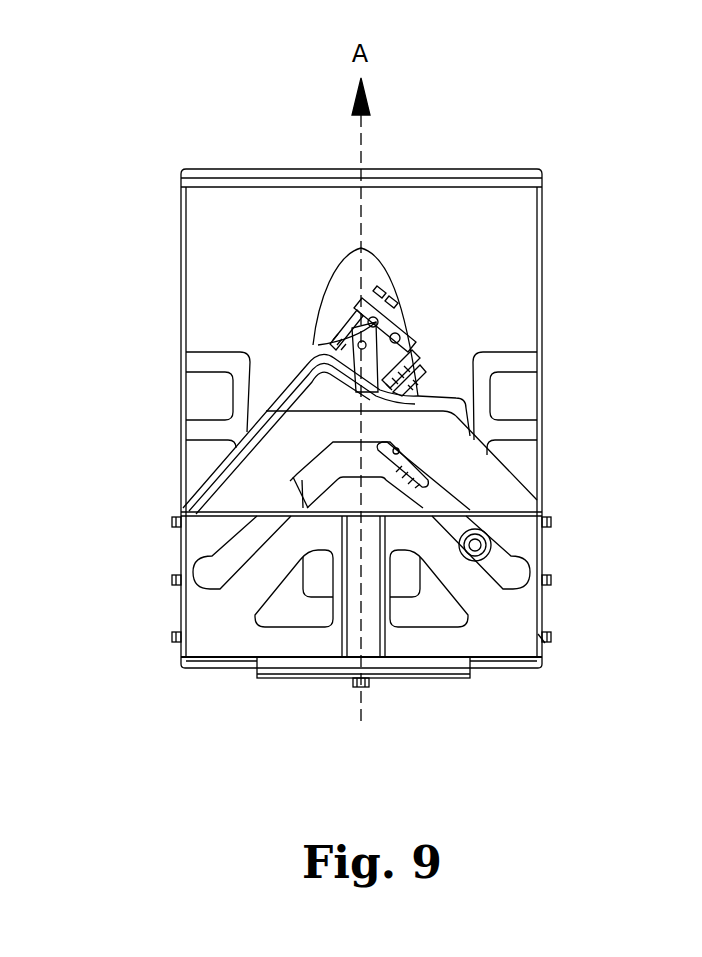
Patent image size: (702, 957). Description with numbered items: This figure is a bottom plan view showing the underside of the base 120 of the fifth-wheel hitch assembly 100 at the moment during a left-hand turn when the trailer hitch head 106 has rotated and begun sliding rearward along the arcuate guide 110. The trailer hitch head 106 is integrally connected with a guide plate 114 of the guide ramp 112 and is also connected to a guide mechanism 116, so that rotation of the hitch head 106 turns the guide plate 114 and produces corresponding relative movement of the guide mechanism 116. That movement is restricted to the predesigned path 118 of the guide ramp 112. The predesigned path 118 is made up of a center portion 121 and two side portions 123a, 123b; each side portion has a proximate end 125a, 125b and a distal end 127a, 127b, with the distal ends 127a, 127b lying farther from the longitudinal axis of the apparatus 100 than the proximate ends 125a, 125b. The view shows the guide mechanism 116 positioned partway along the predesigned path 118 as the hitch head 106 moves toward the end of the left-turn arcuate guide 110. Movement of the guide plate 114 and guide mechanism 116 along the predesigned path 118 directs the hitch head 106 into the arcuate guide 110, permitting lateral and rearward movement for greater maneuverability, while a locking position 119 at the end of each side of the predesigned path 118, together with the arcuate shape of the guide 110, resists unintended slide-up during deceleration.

The hitch assembly 100 is at (205, 78).
The trailer hitch head 106 is at (352, 298).
The arcuate guide 110 is at (370, 275).
The guide ramp 112 is at (181, 452).
The guide plate 114 is at (512, 362).
The guide mechanism 116 is at (493, 547).
The predesigned path 118 is at (278, 501).
The locking position 119 is at (195, 572).
The base 120 is at (478, 165).
The center portion 121 is at (363, 451).
The first side portion 123a is at (252, 525).
The second side portion 123b is at (433, 493).
The proximate end of first side portion 125a is at (330, 467).
The proximate end of second side portion 125b is at (403, 455).
The distal end of first side portion 127a is at (218, 582).
The distal end of second side portion 127b is at (535, 578).